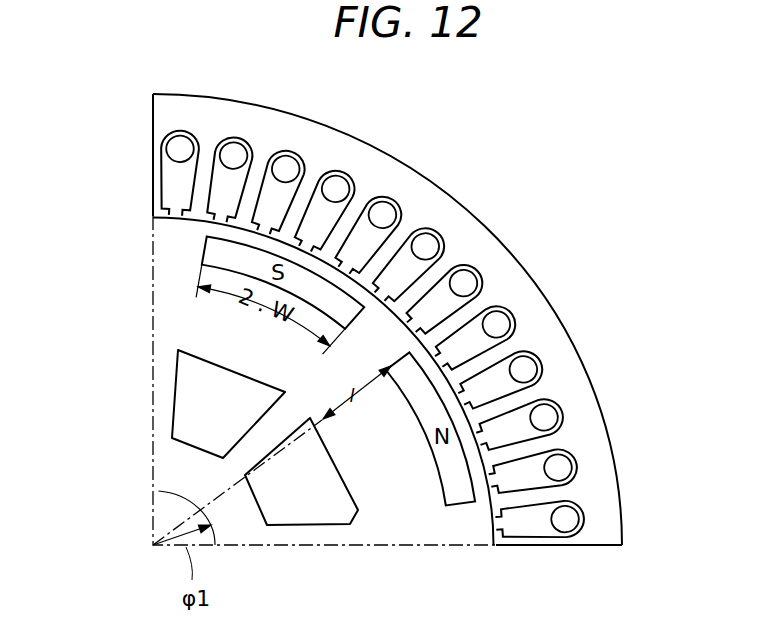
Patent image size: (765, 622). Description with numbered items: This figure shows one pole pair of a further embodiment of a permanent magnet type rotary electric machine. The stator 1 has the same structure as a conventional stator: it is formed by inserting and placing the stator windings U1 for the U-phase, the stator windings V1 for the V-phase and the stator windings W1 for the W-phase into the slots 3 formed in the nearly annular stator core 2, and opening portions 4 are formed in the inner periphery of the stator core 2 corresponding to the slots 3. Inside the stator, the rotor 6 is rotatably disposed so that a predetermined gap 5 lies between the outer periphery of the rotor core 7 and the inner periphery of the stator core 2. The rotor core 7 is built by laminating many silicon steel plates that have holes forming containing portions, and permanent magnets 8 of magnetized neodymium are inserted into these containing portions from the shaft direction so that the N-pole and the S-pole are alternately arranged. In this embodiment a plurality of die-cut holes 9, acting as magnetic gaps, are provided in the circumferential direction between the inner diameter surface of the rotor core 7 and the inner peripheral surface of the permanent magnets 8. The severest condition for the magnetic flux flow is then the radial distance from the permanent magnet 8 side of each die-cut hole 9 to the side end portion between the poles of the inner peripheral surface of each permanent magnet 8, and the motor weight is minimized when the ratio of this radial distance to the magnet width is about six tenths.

The stator 1 is at (627, 538).
The stator core 2 is at (552, 546).
The slots 3 is at (526, 526).
The opening portions 4 is at (566, 446).
The gap 5 is at (497, 347).
The rotor 6 is at (151, 250).
The rotor core 7 is at (162, 330).
The permanent magnets 8 is at (447, 263).
The die-cut holes 9 is at (187, 418).
The stator windings for U-phase U1 is at (434, 243).
The stator windings for V-phase V1 is at (238, 158).
The stator windings for W-phase W1 is at (344, 187).